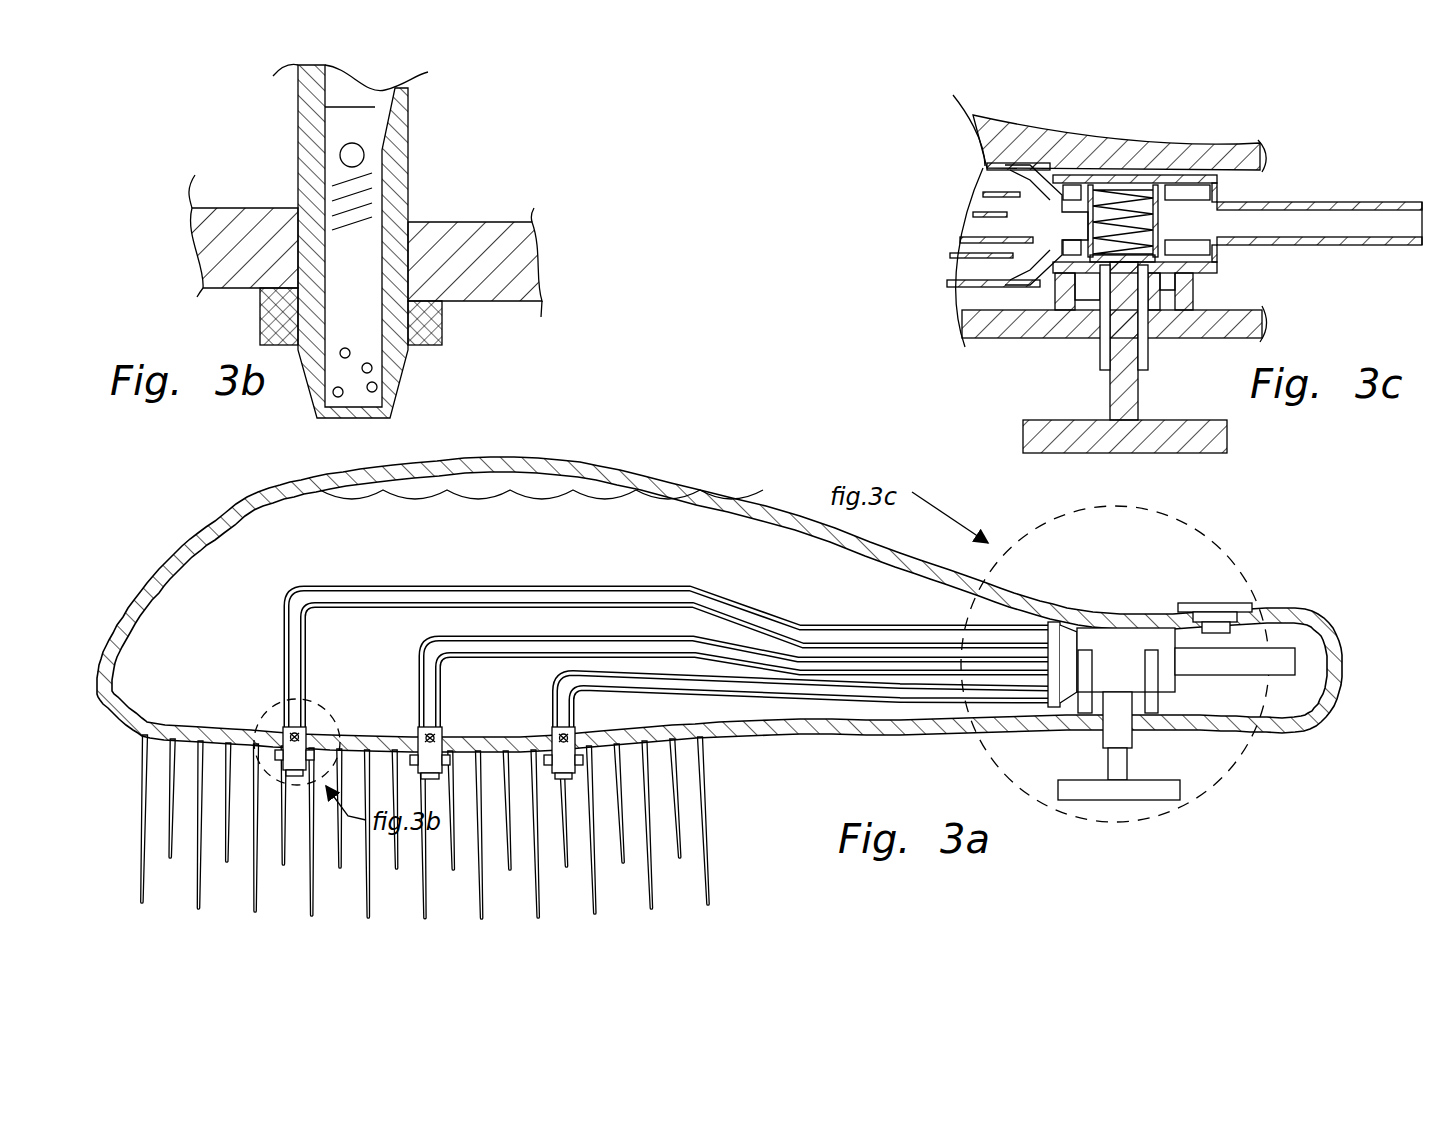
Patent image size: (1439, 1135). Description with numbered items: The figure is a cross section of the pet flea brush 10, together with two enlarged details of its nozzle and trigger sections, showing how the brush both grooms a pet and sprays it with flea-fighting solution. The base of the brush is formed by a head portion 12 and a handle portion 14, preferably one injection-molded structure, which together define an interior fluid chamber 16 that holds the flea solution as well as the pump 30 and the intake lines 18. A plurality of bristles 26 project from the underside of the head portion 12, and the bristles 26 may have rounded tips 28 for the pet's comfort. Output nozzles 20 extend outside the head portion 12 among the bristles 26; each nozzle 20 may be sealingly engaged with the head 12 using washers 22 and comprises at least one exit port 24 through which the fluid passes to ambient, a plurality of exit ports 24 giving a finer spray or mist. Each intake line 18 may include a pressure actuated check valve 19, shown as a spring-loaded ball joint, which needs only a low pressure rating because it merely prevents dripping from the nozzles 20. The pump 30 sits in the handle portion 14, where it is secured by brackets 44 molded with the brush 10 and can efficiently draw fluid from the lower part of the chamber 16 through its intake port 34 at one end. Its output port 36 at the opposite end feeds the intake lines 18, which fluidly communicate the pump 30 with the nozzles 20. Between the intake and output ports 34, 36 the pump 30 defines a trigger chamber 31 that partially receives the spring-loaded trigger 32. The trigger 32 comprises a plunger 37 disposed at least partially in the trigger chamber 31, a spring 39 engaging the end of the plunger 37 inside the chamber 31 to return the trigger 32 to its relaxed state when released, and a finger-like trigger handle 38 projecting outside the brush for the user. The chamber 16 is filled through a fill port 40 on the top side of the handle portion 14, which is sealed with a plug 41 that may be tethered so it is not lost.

In FIG. 3A, the pet flea brush 10 is at (719, 528).
In FIG. 3A, the head portion 12 is at (247, 496).
In FIG. 3A, the handle portion 14 is at (1212, 675).
In FIG. 3A, the fluid chamber 16 is at (610, 522).
In FIG. 3A, the intake lines 18 is at (640, 582).
In FIG. 3B, the check valve 19 is at (362, 159).
In FIG. 3B, the output nozzle 20 is at (390, 260).
In FIG. 3B, the washer 22 is at (443, 317).
In FIG. 3B, the exit port 24 is at (407, 368).
In FIG. 3A, the bristles 26 is at (444, 827).
In FIG. 3A, the rounded tips 28 is at (714, 916).
In FIG. 3A, the pump 30 is at (1100, 630).
In FIG. 3C, the trigger chamber 31 is at (1117, 186).
In FIG. 3A, the spring-loaded trigger 32 is at (1212, 771).
In FIG. 3A, the intake port 34 is at (1295, 662).
In FIG. 3A, the output port 36 is at (1047, 622).
In FIG. 3A, the plunger 37 is at (1108, 763).
In FIG. 3C, the plunger 37 is at (1148, 290).
In FIG. 3A, the trigger handle 38 is at (1153, 800).
In FIG. 3C, the spring 39 is at (1138, 185).
In FIG. 3A, the fill port 40 is at (1232, 622).
In FIG. 3A, the plug 41 is at (1218, 602).
In FIG. 3A, the brackets 44 is at (1152, 698).